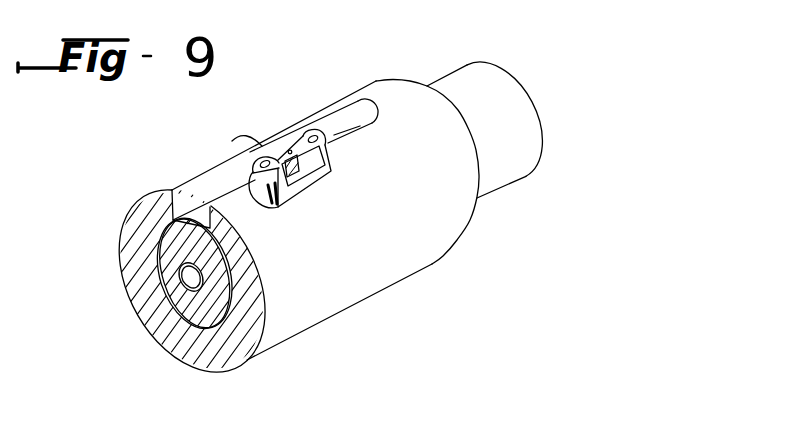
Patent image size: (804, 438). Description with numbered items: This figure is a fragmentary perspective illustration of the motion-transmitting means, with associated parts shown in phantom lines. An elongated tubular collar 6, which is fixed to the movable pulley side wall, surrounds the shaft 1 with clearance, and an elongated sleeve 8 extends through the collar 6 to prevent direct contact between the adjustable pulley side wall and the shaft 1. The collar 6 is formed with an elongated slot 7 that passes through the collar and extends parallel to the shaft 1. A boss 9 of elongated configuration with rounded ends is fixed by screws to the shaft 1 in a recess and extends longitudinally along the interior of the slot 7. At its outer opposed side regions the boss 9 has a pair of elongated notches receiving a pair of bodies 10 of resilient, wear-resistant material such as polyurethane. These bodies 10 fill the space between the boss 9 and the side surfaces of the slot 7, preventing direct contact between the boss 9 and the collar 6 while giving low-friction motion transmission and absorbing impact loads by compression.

The shaft 1 is at (170, 295).
The collar 6 is at (124, 219).
The slot 7 is at (193, 192).
The sleeve 8 is at (162, 278).
The boss 9 is at (298, 195).
The bodies 10 is at (243, 138).